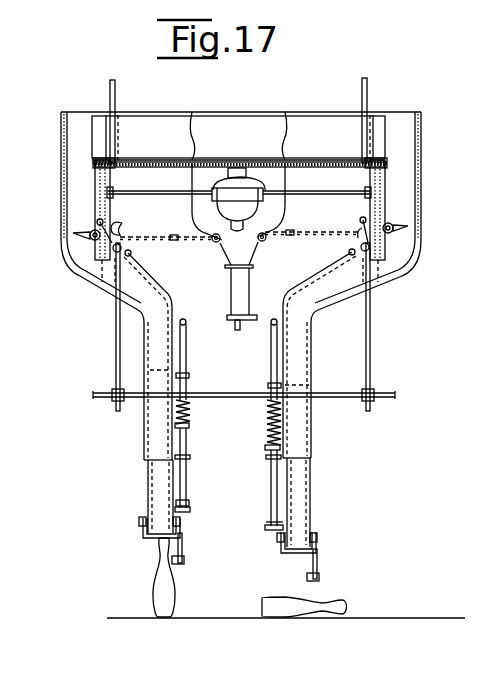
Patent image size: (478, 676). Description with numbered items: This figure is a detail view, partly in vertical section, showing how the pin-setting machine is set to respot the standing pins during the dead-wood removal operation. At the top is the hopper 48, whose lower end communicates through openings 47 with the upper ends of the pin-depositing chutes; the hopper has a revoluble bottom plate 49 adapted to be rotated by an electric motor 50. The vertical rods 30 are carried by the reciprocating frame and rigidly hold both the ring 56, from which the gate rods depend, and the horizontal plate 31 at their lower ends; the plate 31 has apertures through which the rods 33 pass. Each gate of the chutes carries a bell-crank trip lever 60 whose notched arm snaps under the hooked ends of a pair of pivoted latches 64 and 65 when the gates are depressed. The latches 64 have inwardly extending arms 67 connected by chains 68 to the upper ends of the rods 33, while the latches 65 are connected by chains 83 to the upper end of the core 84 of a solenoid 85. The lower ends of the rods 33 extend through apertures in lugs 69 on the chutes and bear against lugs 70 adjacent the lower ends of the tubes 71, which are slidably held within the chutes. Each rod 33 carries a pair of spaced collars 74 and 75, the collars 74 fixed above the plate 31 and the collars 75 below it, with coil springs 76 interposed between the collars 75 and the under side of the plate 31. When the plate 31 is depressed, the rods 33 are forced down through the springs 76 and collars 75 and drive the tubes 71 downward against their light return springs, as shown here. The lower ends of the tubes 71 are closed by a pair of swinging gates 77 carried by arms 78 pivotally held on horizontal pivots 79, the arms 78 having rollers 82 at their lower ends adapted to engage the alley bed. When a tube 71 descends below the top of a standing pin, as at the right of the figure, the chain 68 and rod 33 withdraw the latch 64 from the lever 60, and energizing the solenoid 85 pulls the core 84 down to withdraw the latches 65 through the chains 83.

The vertical rods 30 is at (117, 343).
The horizontal plate 31 is at (336, 398).
The rods 33 is at (271, 358).
The openings 47 is at (110, 127).
The hopper 48 is at (315, 137).
The revoluble bottom plate 49 is at (208, 165).
The electric motor 50 is at (250, 192).
The ring 56 is at (95, 163).
The bell-crank trip lever 60 is at (91, 231).
The pivoted latch 64 is at (183, 238).
The pivoted latch 65 is at (121, 230).
The inwardly extending arms 67 is at (122, 248).
The chains 68 is at (148, 272).
The lugs 69 is at (266, 457).
The lugs 70 is at (268, 527).
The tubes 71 is at (160, 470).
The collars 74 is at (189, 377).
The collars 75 is at (265, 444).
The coil springs 76 is at (190, 410).
The swinging gates 77 is at (150, 538).
The arms 78 is at (182, 548).
The horizontal pivots 79 is at (181, 521).
The rollers 82 is at (180, 564).
The chains 83 is at (173, 238).
The core 84 is at (240, 320).
The solenoid 85 is at (250, 290).